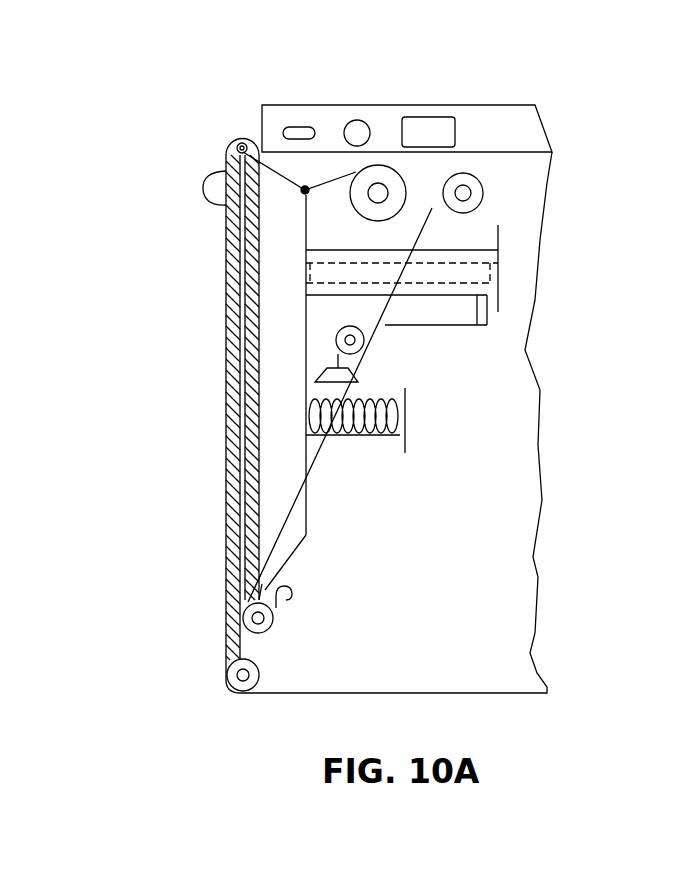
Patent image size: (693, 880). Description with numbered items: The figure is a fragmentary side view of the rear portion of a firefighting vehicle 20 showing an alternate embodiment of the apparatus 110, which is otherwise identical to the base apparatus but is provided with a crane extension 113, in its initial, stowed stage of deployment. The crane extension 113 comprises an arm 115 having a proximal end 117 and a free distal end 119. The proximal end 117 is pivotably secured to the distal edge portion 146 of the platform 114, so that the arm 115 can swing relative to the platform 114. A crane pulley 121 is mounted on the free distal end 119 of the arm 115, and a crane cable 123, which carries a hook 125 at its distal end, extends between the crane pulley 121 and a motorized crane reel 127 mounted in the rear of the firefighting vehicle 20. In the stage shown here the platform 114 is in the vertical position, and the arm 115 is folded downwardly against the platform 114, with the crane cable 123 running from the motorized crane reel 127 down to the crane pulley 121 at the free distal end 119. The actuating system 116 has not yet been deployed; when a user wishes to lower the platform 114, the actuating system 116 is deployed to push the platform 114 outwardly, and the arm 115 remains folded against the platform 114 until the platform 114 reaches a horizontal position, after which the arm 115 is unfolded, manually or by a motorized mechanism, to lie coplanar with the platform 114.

The firefighting vehicle 20 is at (482, 72).
The apparatus 110 is at (183, 128).
The crane extension 113 is at (279, 220).
The platform 114 is at (226, 438).
The arm 115 is at (243, 373).
The actuating system 116 is at (470, 346).
The proximal end 117 is at (266, 168).
The free distal end 119 is at (262, 585).
The crane pulley 121 is at (273, 630).
The crane cable 123 is at (300, 512).
The hook 125 is at (288, 586).
The motorized crane reel 127 is at (482, 168).
The distal edge portion 146 is at (226, 190).